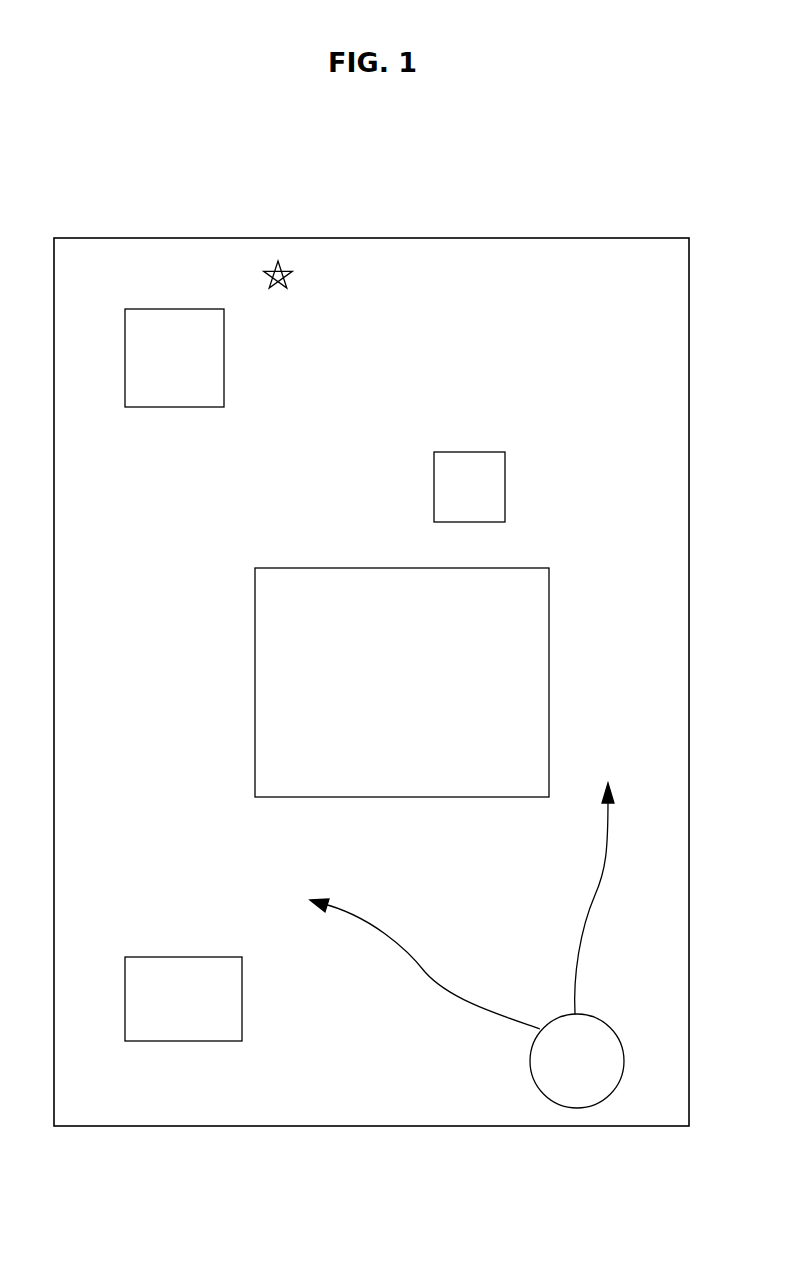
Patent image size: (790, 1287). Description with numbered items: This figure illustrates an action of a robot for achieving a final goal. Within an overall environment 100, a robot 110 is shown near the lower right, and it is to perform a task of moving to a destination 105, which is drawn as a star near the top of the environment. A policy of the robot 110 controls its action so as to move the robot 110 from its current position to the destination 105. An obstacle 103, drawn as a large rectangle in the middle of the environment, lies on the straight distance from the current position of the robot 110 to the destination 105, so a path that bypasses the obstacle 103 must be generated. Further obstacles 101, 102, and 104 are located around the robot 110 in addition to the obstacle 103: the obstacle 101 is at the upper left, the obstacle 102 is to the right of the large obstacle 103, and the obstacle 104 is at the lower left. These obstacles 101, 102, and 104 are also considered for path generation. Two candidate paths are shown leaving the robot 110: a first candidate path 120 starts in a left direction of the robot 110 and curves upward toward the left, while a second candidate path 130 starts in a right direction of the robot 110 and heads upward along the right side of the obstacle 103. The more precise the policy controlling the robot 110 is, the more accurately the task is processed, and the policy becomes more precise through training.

The display screen / image area 100 is at (370, 238).
The obstacle 101 is at (224, 357).
The obstacle 102 is at (505, 485).
The obstacle 103 is at (333, 568).
The obstacle 104 is at (182, 957).
The destination 105 is at (278, 262).
The robot 110 is at (577, 1108).
The first candidate path 120 is at (428, 977).
The second candidate path 130 is at (592, 907).